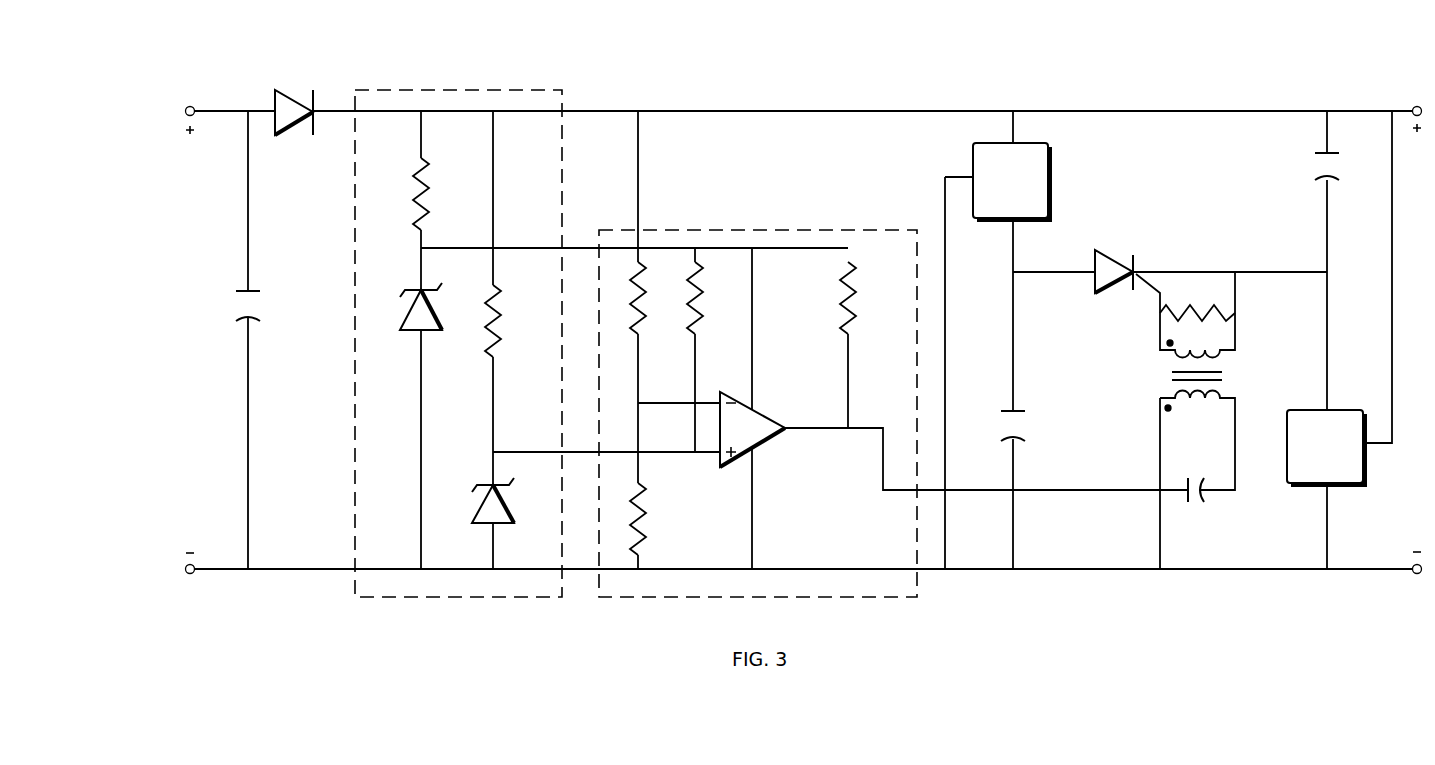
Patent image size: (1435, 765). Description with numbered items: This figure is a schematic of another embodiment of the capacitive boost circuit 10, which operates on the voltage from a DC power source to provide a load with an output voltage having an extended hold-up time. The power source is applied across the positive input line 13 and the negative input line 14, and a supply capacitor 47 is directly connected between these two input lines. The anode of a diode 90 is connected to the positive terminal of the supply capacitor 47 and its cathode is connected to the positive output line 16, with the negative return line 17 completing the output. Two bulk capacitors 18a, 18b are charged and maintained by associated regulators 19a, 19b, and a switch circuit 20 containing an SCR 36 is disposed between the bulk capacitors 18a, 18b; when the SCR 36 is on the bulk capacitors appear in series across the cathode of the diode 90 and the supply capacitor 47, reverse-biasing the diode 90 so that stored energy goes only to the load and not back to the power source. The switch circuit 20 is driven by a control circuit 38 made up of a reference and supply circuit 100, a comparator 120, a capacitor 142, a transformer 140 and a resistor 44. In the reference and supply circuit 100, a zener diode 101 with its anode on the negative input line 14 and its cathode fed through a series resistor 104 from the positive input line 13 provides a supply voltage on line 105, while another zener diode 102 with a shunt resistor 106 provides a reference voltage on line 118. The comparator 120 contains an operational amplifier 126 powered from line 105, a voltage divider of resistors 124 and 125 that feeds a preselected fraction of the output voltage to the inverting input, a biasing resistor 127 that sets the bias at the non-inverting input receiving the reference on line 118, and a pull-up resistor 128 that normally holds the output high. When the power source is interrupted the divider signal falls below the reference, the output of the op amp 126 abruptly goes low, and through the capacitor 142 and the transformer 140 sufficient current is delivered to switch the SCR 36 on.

The boost circuit 10 is at (672, 102).
The positive input line 13 is at (230, 110).
The negative input line 14 is at (236, 572).
The positive output line 16 is at (1396, 108).
The negative output terminal 17 is at (1398, 572).
The bulk capacitor 18a is at (1022, 414).
The bulk capacitor 18b is at (1322, 174).
The regulator 19a is at (1052, 178).
The regulator 19b is at (1346, 488).
The switch circuit 20 is at (1190, 206).
The SCR 36 is at (1112, 250).
The control circuit 38 is at (1160, 577).
The resistor 44 is at (1197, 326).
The supply capacitor 47 is at (254, 313).
The diode 90 is at (296, 92).
The reference and supply circuit 100 is at (418, 90).
The zener diode 101 is at (428, 332).
The zener diode 102 is at (500, 525).
The series resistor 104 is at (426, 179).
The supply voltage line 105 is at (572, 248).
The shunt resistor 106 is at (500, 322).
The reference voltage line 118 is at (582, 454).
The comparator 120 is at (768, 228).
The resistor 124 is at (642, 281).
The resistor 125 is at (650, 528).
The operational amplifier 126 is at (760, 437).
The biasing resistor 127 is at (702, 318).
The pull-up resistor 128 is at (844, 298).
The transformer 140 is at (1182, 410).
The capacitor 142 is at (1188, 490).